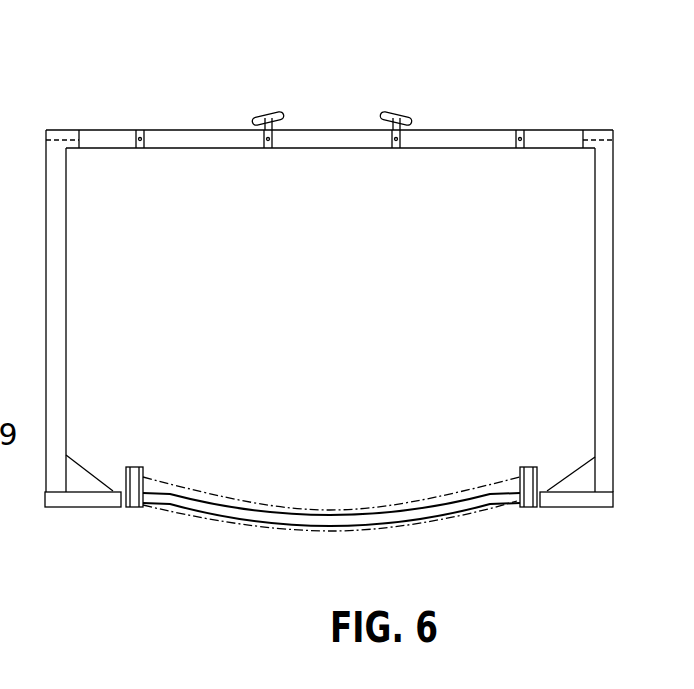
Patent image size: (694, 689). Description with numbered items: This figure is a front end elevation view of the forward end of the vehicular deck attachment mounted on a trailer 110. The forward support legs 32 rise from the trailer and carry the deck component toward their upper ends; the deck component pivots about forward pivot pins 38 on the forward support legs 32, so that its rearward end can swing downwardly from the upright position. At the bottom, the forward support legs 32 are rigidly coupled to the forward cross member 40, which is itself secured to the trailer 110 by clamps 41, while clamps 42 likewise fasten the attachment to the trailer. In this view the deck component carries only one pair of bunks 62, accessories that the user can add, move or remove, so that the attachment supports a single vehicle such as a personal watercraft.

The forward support leg 32 is at (58, 321).
The forward pivot pin 38 is at (67, 130).
The bunks 62 is at (268, 104).
The clamps 41 is at (45, 498).
The clamps 42 is at (133, 508).
The forward cross member 40 is at (415, 531).
The trailer 110 is at (462, 487).